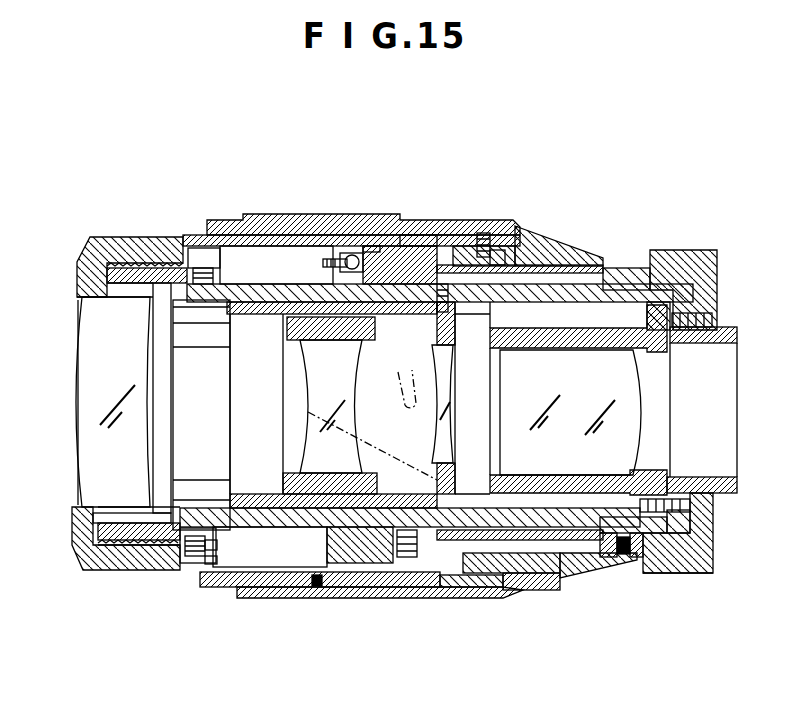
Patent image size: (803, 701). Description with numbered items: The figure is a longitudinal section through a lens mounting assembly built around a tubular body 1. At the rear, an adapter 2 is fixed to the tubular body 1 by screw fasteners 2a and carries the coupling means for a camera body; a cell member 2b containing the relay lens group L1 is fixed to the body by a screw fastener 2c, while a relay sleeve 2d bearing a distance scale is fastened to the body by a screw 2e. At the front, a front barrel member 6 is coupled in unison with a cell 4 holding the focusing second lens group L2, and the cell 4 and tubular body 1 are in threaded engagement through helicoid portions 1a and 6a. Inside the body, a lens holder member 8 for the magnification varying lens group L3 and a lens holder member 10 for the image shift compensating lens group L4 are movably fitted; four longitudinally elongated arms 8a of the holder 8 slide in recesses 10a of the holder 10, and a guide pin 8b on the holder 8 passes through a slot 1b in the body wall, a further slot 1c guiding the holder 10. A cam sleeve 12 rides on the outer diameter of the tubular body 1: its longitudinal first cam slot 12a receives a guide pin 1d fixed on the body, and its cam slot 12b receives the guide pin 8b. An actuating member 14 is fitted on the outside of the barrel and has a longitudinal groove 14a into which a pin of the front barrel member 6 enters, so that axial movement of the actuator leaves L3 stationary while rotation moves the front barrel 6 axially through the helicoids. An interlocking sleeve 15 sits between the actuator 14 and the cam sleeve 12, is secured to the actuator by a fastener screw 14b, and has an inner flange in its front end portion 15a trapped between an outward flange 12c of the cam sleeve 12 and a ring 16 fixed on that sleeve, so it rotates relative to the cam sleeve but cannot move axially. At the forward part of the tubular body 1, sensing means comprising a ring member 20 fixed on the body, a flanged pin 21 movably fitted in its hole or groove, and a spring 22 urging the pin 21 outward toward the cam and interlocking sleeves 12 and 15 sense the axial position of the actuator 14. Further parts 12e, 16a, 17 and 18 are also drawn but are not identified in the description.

The tubular body 1 is at (620, 282).
The helicoid portion 1a is at (112, 570).
The slot 1b is at (392, 458).
The slot 1c is at (408, 385).
The guide pin 1d is at (490, 257).
The adapter 2 is at (680, 266).
The screw fasteners 2a is at (713, 320).
The cell member 2b is at (580, 545).
The screw fastener 2c is at (672, 574).
The relay sleeve 2d is at (607, 558).
The screw 2e is at (623, 558).
The cell 4 is at (85, 290).
The front barrel member 6 is at (115, 247).
The helicoid portion 6a is at (150, 570).
The lens holder member 8 is at (283, 578).
The longitudinally elongated arms 8a is at (542, 483).
The guide pin 8b is at (463, 590).
The lens holder member 10 is at (336, 246).
The recesses 10a is at (470, 246).
The cam sleeve 12 is at (415, 236).
The first cam slot 12a is at (586, 267).
The third cam slot 12b is at (490, 575).
The outward flange 12c is at (378, 246).
The ring portion 12e is at (340, 538).
The actuating member 14 is at (223, 225).
The longitudinal groove 14a is at (383, 598).
The fastener screw 14b is at (492, 238).
The interlocking sleeve 15 is at (540, 243).
The front end portion 15a is at (412, 238).
The ring 16 is at (442, 282).
The screw 16a is at (407, 560).
The set screw 17 is at (327, 258).
The click ball 18 is at (349, 253).
The ring member 20 is at (192, 562).
The flanged pin 21 is at (216, 548).
The spring 22 is at (190, 558).
The relay lens group L1 is at (497, 420).
The second lens group L2 is at (93, 437).
The magnification varying lens group L3 is at (308, 433).
The image shift compensating lens group L4 is at (438, 408).